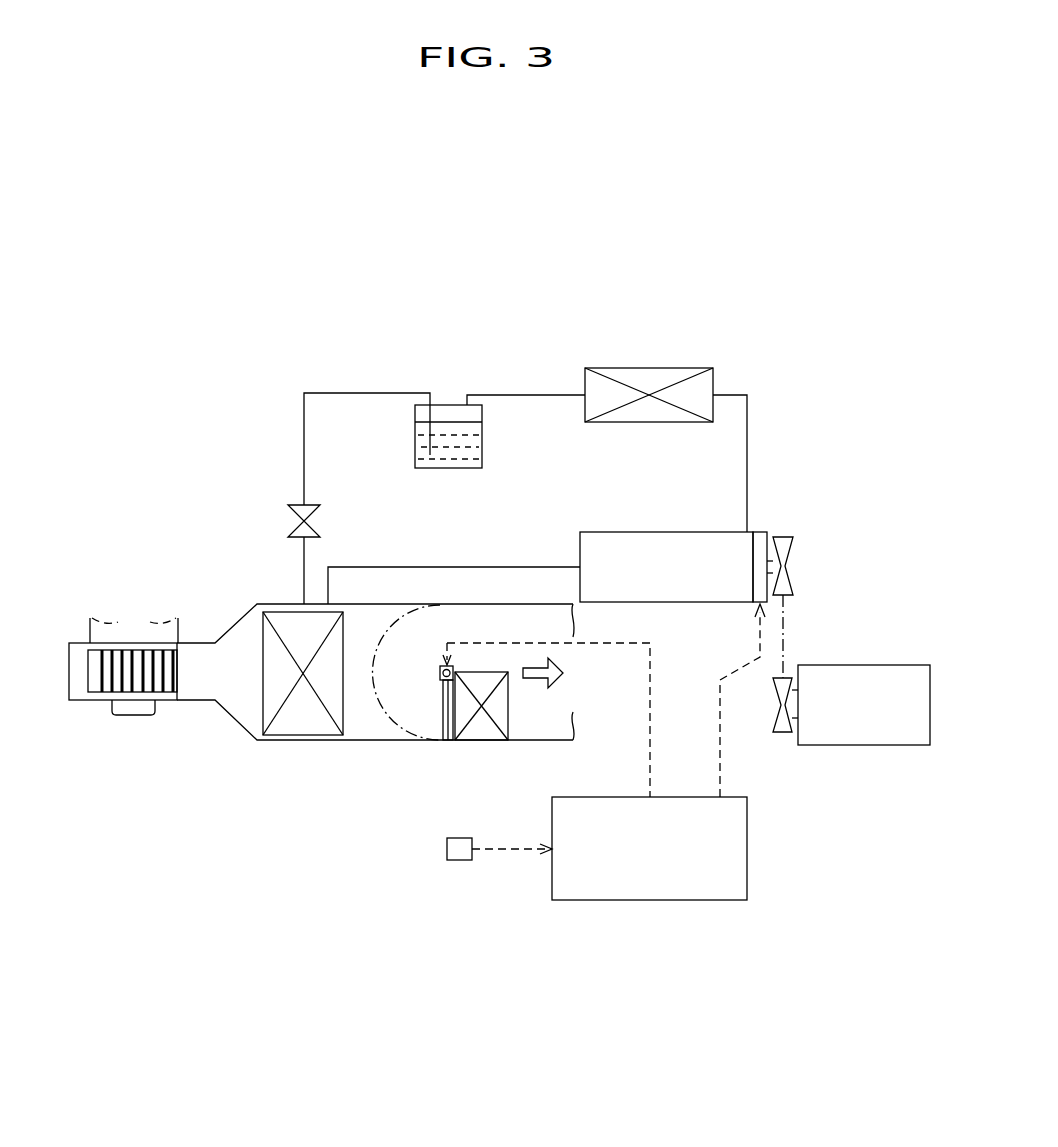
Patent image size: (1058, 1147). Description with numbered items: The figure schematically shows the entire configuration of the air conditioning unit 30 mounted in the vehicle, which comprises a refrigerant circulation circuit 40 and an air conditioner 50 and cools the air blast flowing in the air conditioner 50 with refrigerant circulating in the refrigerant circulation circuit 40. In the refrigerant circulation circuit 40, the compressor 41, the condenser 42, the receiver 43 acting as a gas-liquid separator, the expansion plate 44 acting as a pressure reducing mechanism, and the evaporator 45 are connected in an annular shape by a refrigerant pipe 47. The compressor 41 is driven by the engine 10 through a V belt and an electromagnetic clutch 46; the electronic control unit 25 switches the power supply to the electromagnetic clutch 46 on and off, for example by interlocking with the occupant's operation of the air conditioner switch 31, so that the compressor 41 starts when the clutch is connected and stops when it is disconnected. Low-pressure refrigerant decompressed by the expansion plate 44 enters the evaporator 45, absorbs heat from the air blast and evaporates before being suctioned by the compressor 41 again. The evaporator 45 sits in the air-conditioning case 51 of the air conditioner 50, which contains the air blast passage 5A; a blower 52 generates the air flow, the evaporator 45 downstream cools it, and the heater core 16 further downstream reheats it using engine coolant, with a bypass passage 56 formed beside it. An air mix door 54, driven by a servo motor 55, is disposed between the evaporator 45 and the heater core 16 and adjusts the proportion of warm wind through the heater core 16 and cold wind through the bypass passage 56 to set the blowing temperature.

The air blast passage 5A is at (242, 658).
The engine 10 is at (878, 665).
The heater core 16 is at (480, 743).
The electronic control unit 25 is at (648, 903).
The air conditioning unit 30 is at (782, 367).
The air conditioner switch 31 is at (233, 723).
The refrigerant circulation circuit 40 is at (367, 390).
The compressor 41 is at (686, 531).
The condenser 42 is at (677, 368).
The receiver 43 is at (485, 448).
The expansion plate 44 is at (312, 505).
The evaporator 45 is at (300, 717).
The electromagnetic clutch 46 is at (768, 528).
The refrigerant pipe 47 is at (298, 437).
The air conditioner 50 is at (380, 745).
The air-conditioning case 51 is at (176, 702).
The blower 52 is at (97, 705).
The air mix door 54 is at (443, 705).
The servo motor 55 is at (440, 670).
The bypass passage 56 is at (490, 623).